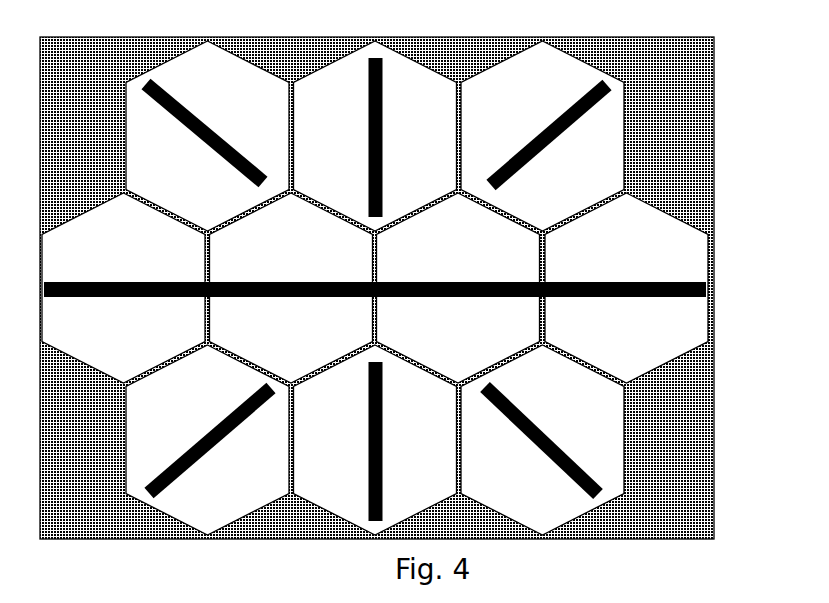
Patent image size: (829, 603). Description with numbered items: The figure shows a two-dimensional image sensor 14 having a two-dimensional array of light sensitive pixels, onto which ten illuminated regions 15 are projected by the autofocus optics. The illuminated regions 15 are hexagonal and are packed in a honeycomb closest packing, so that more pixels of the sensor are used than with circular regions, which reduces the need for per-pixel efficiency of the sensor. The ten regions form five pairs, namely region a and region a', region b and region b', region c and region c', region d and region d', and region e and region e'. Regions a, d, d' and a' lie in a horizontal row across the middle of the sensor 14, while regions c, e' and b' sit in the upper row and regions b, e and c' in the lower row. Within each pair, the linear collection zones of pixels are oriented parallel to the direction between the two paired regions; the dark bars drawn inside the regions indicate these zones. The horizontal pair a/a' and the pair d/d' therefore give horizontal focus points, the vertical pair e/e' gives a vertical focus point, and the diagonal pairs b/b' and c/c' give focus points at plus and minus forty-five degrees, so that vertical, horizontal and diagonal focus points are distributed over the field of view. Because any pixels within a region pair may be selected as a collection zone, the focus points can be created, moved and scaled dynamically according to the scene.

The substrate sheet 14 is at (143, 37).
The illuminated regions 15 is at (207, 118).
The illuminated region a is at (123, 288).
The illuminated region b is at (207, 440).
The illuminated region c is at (207, 136).
The illuminated region d is at (291, 288).
The illuminated region e is at (375, 440).
The illuminated region a' is at (626, 288).
The illuminated region b' is at (542, 136).
The illuminated region c' is at (542, 440).
The illuminated region d' is at (458, 288).
The illuminated region e' is at (375, 136).